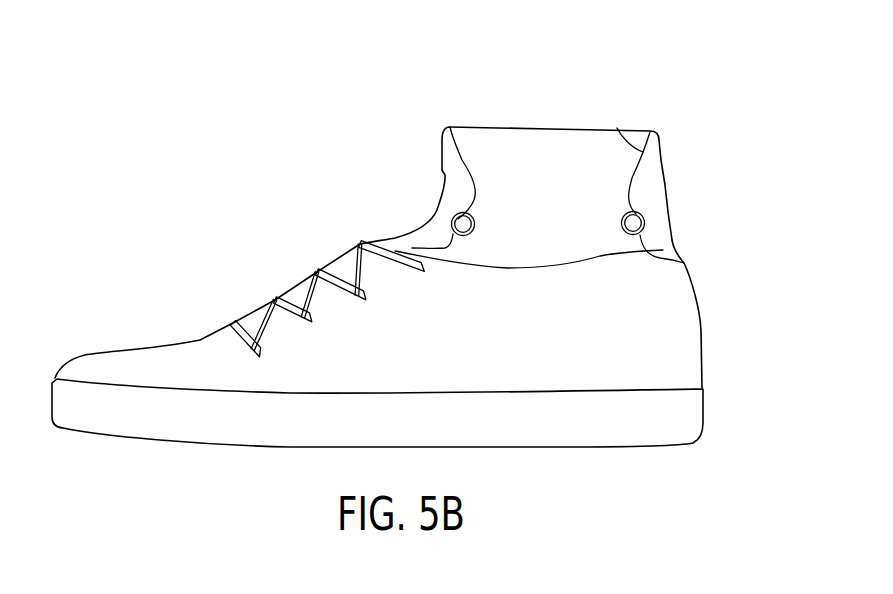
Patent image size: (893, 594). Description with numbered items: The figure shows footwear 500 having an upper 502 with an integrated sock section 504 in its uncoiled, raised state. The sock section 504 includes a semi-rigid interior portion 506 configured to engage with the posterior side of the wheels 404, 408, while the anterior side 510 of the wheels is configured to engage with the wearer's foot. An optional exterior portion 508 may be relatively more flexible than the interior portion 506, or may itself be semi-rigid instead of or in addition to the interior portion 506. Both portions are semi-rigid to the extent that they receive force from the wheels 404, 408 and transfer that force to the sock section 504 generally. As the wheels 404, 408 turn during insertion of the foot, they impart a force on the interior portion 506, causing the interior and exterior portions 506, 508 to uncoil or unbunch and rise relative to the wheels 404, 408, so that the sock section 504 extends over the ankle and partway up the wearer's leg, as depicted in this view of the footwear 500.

The footwear 500 is at (702, 328).
The upper 502 is at (190, 353).
The sock section 504 is at (668, 160).
The interior portion 506 is at (452, 231).
The exterior portion 508 is at (338, 265).
The anterior side 510 is at (477, 225).
The wheel 404 is at (464, 232).
The wheel 408 is at (631, 236).